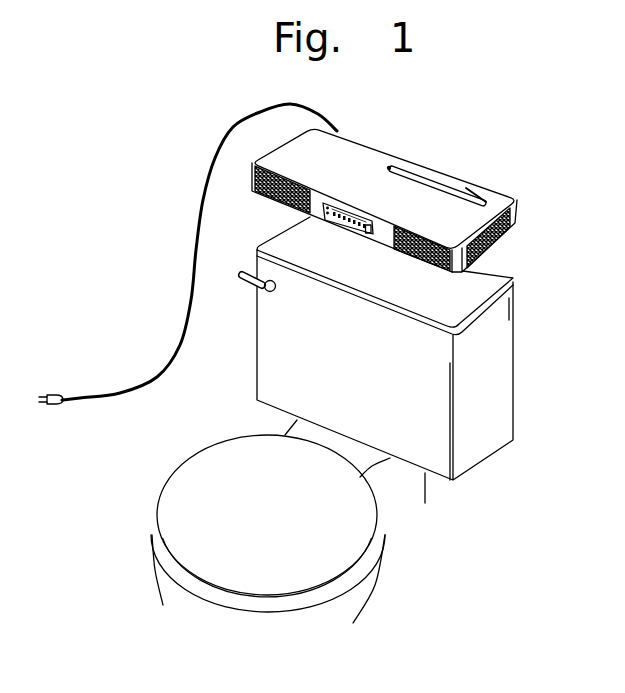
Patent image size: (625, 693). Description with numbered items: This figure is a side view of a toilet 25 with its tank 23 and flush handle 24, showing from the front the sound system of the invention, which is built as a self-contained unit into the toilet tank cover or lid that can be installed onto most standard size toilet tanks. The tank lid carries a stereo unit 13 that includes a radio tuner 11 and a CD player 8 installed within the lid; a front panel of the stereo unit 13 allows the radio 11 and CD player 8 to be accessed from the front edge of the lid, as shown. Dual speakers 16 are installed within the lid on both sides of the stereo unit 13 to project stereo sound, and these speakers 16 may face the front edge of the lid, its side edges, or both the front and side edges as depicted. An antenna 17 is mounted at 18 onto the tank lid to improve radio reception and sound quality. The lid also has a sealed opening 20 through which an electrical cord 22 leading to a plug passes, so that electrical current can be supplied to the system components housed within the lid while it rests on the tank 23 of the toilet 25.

The sealed opening 20 is at (348, 128).
The antenna 17 is at (388, 166).
The stereo unit 13 is at (332, 207).
The CD player 8 is at (352, 222).
The radio tuner 11 is at (372, 227).
The antenna mounting location 18 is at (470, 190).
The speakers 16 is at (250, 178).
The flush handle 24 is at (243, 273).
The electrical cord 22 is at (92, 393).
The tank 23 is at (490, 442).
The toilet 25 is at (360, 597).